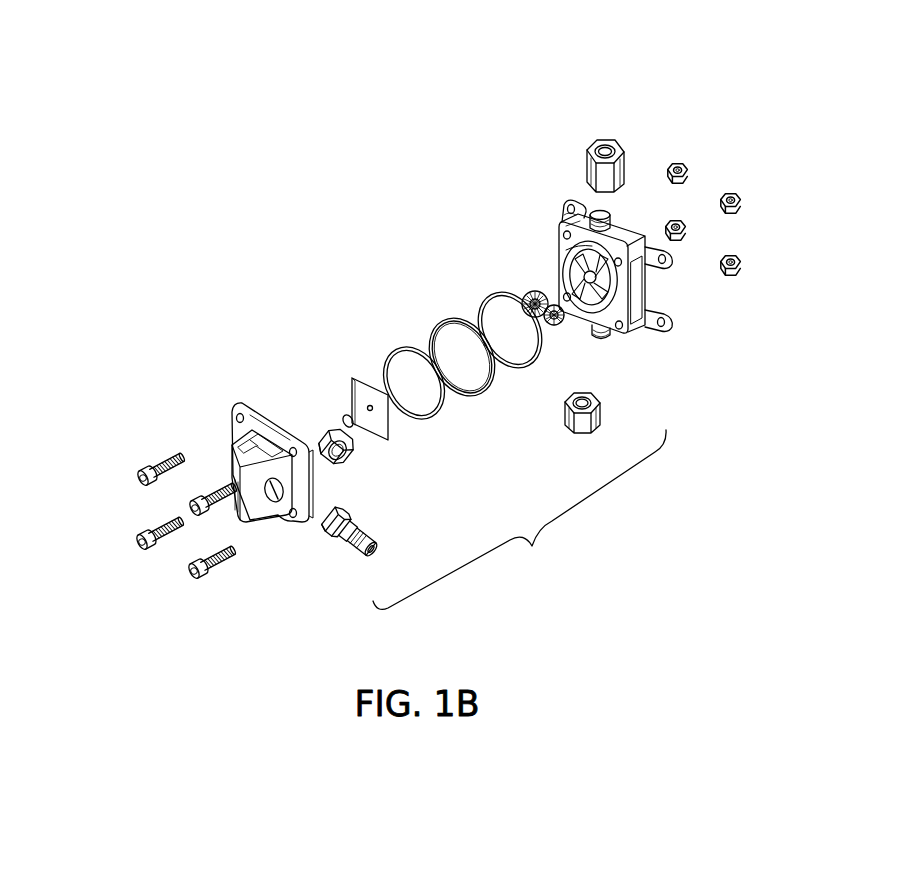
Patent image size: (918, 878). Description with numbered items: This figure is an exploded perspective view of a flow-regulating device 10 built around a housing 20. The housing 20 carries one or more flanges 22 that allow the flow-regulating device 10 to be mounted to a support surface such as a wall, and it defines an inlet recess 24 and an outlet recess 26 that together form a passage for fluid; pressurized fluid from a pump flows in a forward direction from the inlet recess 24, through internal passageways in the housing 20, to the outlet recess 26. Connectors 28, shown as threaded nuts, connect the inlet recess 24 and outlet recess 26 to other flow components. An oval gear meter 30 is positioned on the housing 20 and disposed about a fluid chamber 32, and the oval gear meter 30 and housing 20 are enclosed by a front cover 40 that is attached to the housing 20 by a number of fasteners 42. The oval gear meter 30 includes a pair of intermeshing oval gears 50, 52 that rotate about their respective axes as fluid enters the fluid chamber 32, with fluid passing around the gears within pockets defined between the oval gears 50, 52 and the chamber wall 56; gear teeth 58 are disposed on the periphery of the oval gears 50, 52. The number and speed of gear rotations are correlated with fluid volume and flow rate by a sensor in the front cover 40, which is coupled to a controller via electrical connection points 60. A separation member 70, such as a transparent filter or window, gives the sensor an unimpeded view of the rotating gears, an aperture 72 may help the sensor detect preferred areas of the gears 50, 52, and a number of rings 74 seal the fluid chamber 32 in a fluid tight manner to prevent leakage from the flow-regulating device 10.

The flow-regulating device 10 is at (664, 80).
The housing 20 is at (630, 331).
The flanges 22 is at (570, 203).
The inlet recess 24 is at (604, 340).
The outlet recess 26 is at (611, 221).
The connectors 28 is at (596, 143).
The oval gear meter 30 is at (519, 519).
The fluid chamber 32 is at (590, 298).
The front cover 40 is at (290, 518).
The fasteners 42 is at (152, 466).
The oval gear 50 is at (496, 306).
The oval gear 52 is at (556, 335).
The chamber wall 56 is at (563, 250).
The gear teeth 58 is at (532, 291).
The electrical connection points 60 is at (352, 548).
The separation member 70 is at (478, 384).
The aperture 72 is at (353, 377).
The rings 74 is at (407, 356).